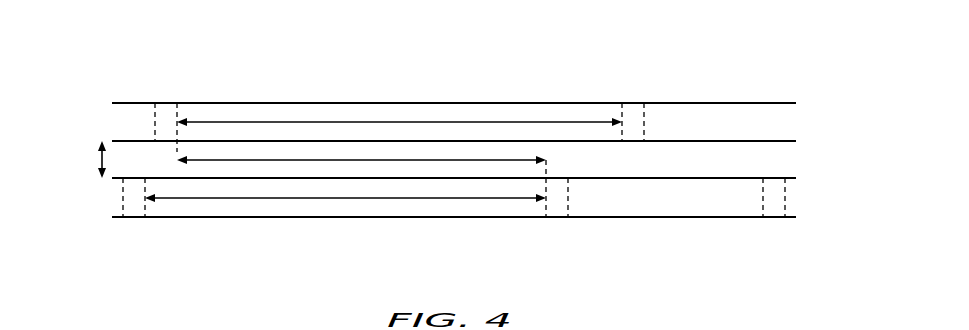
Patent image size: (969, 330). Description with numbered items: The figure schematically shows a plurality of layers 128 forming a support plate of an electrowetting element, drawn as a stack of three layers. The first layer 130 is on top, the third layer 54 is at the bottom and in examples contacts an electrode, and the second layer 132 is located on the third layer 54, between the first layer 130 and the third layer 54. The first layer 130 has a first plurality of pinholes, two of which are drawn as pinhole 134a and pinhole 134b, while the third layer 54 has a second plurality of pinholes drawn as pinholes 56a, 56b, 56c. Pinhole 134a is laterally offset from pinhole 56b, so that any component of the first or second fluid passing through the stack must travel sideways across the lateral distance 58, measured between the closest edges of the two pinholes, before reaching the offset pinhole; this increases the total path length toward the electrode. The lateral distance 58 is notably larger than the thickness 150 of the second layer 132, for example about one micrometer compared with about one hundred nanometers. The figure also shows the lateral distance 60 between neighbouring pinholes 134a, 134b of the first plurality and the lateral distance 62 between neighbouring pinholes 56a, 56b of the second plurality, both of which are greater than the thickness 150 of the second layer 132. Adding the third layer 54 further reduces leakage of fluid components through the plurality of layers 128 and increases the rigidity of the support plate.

The plurality of layers 128 is at (779, 49).
The first layer 130 is at (797, 123).
The second layer 132 is at (797, 161).
The third layer 54 is at (797, 198).
The pinhole of the first plurality of pinholes 134a is at (164, 105).
The pinhole of the first plurality of pinholes 134b is at (630, 105).
The pinhole of the second plurality of pinholes 56a is at (134, 219).
The pinhole of the second plurality of pinholes 56b is at (557, 219).
The pinhole of the second plurality of pinholes 56c is at (774, 219).
The lateral distance 58 is at (339, 159).
The lateral distance 60 is at (462, 121).
The lateral distance 62 is at (365, 199).
The thickness of the second layer 150 is at (96, 160).